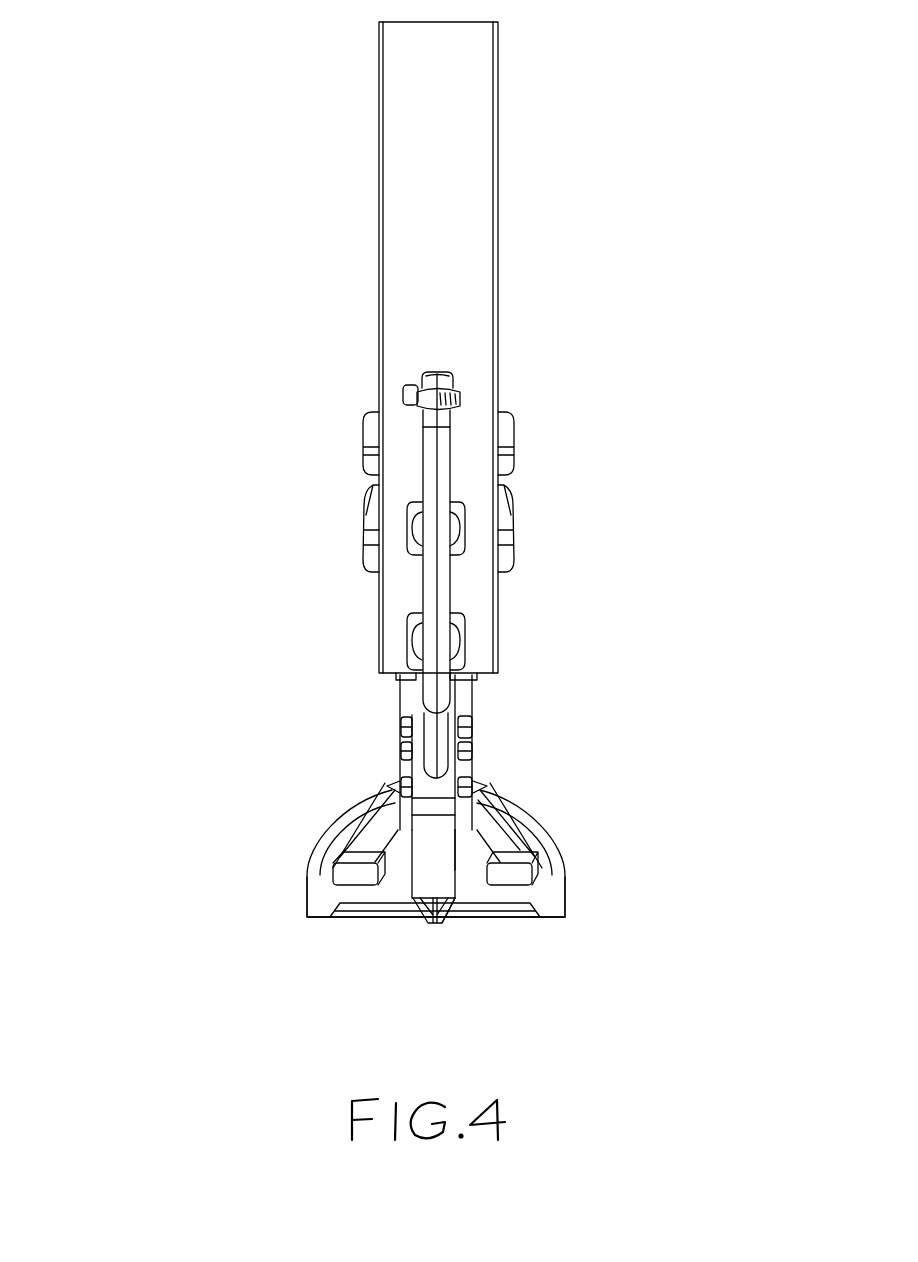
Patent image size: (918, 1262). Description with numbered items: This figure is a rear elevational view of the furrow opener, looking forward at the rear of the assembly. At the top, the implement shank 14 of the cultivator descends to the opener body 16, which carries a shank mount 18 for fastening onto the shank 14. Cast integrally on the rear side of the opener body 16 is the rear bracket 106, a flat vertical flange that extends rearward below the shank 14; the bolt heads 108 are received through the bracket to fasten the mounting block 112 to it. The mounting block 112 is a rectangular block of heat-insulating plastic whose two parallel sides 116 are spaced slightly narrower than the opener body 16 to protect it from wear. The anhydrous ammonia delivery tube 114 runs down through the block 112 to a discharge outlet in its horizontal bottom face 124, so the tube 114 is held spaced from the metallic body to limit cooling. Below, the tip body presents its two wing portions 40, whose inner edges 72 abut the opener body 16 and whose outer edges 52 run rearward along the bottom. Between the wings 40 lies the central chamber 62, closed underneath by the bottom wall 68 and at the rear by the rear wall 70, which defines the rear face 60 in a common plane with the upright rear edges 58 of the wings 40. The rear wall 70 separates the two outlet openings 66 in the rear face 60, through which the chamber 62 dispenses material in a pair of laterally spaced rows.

The implement shank 14 is at (488, 202).
The anhydrous ammonia delivery tube 114 is at (443, 443).
The shank mount 18 is at (467, 515).
The opener body 16 is at (463, 703).
The rear bracket 106 is at (400, 725).
The bolt heads 108 is at (400, 735).
The wing portions 40 is at (290, 786).
The inner edges 72 is at (392, 792).
The mounting block 112 is at (437, 835).
The rear wall 70 is at (463, 843).
The sides 116 is at (388, 838).
The central chamber 62 is at (489, 831).
The upright rear edge 58 is at (567, 893).
The rear face 60 is at (535, 850).
The outlet openings 66 is at (307, 877).
The outer edge 52 is at (310, 916).
The bottom face 124 is at (418, 907).
The bottom wall 68 is at (462, 907).